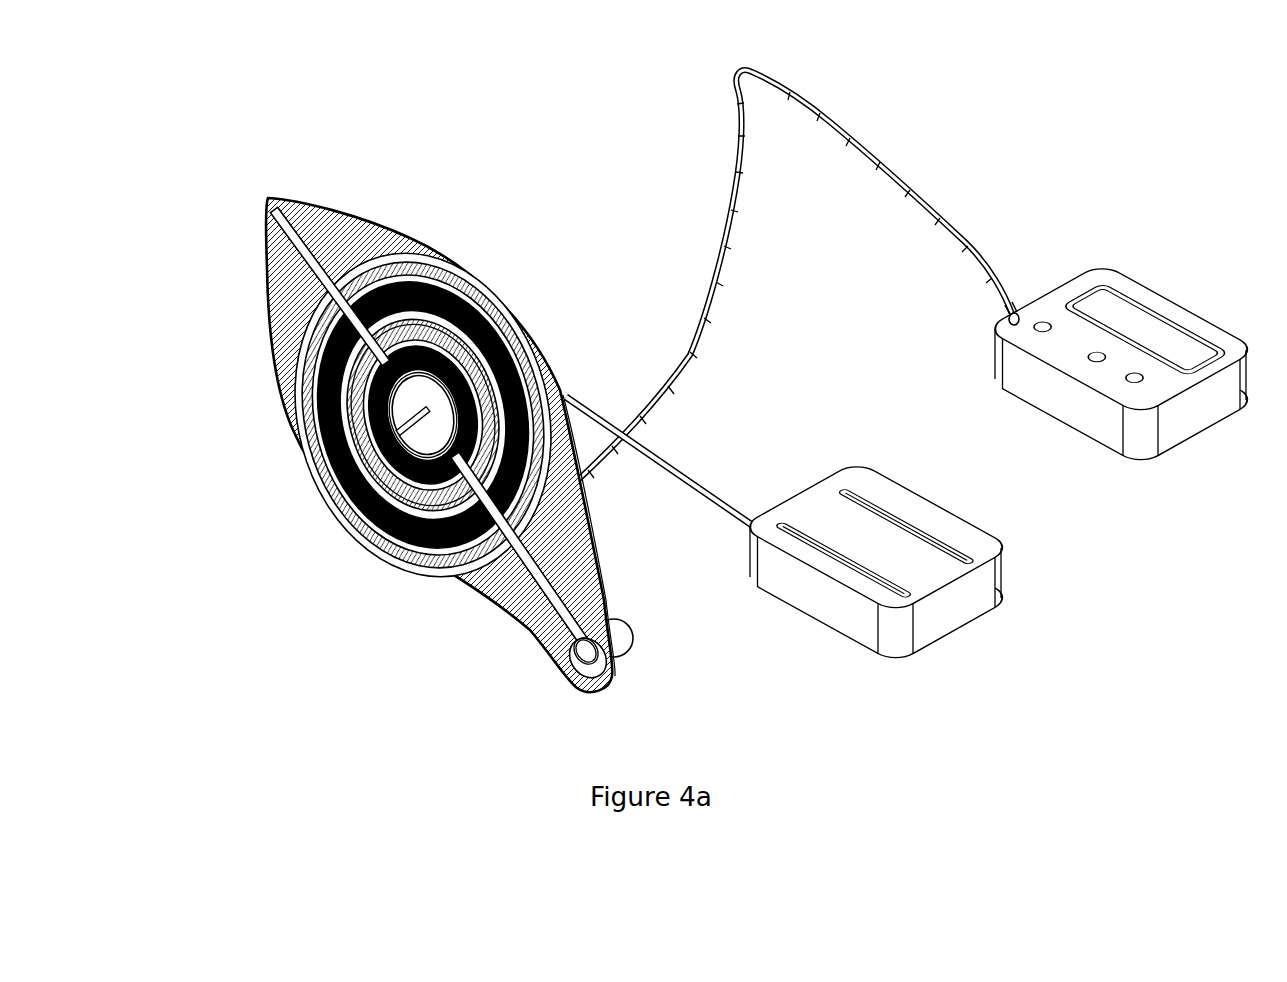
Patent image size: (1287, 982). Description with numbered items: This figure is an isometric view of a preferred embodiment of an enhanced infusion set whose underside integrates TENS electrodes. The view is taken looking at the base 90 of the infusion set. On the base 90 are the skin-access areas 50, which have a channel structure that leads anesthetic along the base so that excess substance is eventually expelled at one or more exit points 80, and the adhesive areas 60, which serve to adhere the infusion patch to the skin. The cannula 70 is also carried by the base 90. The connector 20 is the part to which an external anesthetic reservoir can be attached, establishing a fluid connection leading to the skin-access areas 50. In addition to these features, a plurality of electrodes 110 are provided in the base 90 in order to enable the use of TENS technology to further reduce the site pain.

The connector 20 is at (622, 661).
The skin-access areas 50 is at (480, 505).
The adhesive areas 60 is at (373, 540).
The cannula 70 is at (327, 483).
The exit points 80 is at (266, 199).
The base 90 is at (318, 361).
The electrodes 110 is at (582, 489).